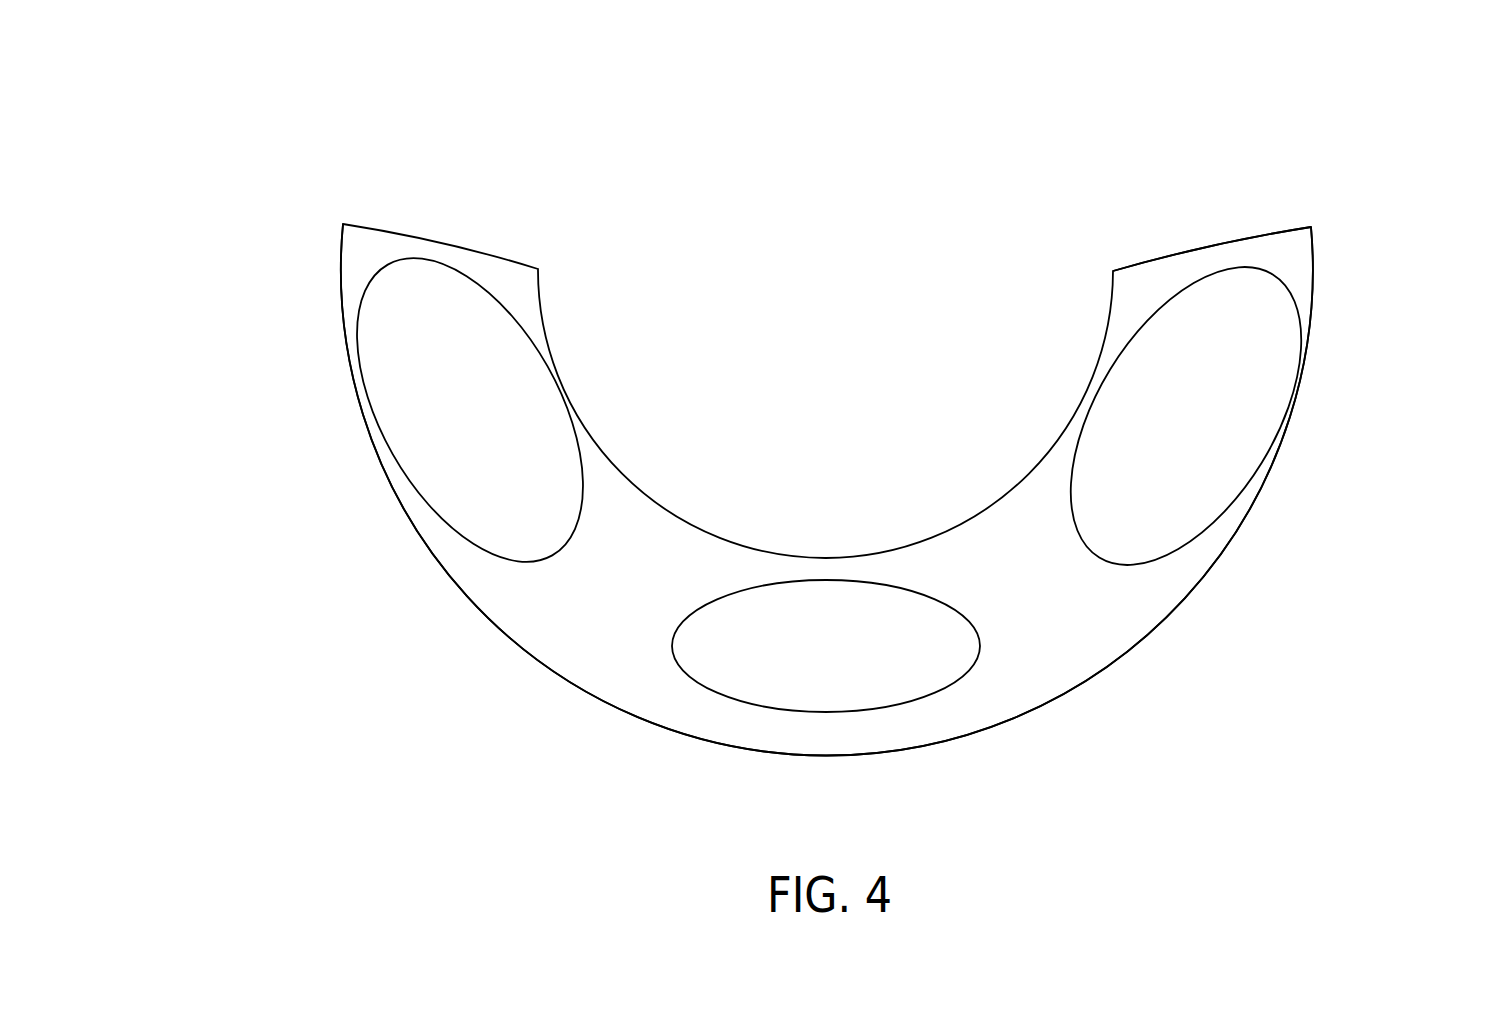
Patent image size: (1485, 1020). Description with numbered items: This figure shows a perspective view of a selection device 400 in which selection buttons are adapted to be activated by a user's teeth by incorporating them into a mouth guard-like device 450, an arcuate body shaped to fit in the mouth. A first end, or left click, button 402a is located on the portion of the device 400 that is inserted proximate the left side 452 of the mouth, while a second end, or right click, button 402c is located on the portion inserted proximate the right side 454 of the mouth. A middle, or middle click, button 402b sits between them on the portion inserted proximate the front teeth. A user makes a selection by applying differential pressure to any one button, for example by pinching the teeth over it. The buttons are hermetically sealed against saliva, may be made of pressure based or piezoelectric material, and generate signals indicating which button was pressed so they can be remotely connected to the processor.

The selection device 400 is at (268, 182).
The first end button 402a is at (1230, 424).
The middle button 402b is at (865, 667).
The second end button 402c is at (522, 438).
The mouth guard-like device 450 is at (550, 608).
The left side 452 is at (1293, 263).
The right side 454 is at (360, 405).